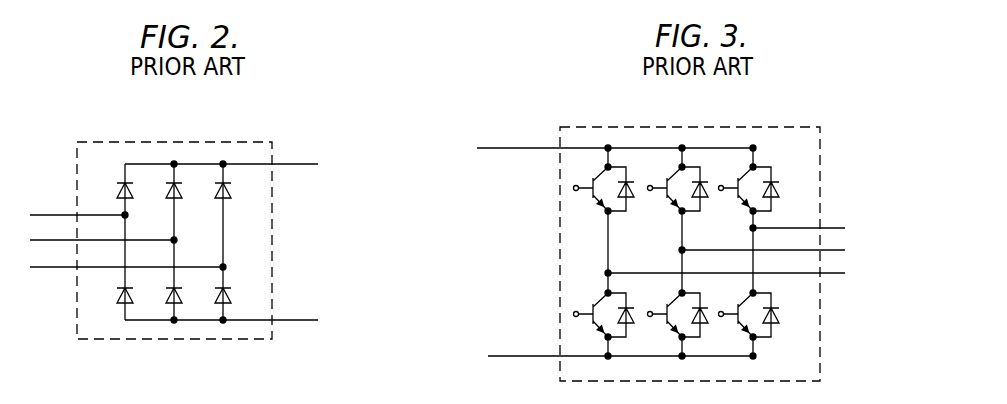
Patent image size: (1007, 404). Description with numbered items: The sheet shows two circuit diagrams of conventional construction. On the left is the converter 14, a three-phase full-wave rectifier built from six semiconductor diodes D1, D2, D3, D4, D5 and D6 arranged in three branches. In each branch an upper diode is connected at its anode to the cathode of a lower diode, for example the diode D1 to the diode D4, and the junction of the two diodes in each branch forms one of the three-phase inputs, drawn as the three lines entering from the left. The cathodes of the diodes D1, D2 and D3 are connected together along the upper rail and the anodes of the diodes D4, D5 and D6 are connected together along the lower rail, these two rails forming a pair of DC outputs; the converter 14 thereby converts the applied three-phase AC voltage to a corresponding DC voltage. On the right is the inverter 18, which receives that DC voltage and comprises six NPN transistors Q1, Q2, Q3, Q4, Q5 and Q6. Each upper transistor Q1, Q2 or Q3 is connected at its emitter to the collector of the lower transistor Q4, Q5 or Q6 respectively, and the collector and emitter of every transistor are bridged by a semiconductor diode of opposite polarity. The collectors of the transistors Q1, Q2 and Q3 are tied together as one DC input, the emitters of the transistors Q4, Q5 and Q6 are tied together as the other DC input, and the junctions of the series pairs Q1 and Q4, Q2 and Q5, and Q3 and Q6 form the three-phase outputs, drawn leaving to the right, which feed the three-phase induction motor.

In FIG. 2, the converter 14 is at (174, 223).
In FIG. 2, the semiconductor diode D1 is at (133, 194).
In FIG. 2, the semiconductor diode D2 is at (182, 194).
In FIG. 2, the semiconductor diode D3 is at (231, 194).
In FIG. 2, the semiconductor diode D4 is at (117, 298).
In FIG. 2, the semiconductor diode D5 is at (166, 298).
In FIG. 2, the semiconductor diode D6 is at (231, 299).
In FIG. 3, the inverter 18 is at (661, 240).
In FIG. 3, the NPN transistor Q1 is at (614, 213).
In FIG. 3, the NPN transistor Q2 is at (688, 213).
In FIG. 3, the NPN transistor Q3 is at (759, 213).
In FIG. 3, the NPN transistor Q4 is at (614, 339).
In FIG. 3, the NPN transistor Q5 is at (688, 339).
In FIG. 3, the NPN transistor Q6 is at (759, 339).